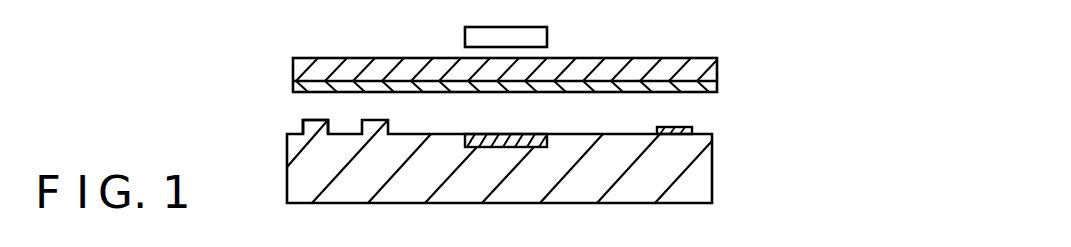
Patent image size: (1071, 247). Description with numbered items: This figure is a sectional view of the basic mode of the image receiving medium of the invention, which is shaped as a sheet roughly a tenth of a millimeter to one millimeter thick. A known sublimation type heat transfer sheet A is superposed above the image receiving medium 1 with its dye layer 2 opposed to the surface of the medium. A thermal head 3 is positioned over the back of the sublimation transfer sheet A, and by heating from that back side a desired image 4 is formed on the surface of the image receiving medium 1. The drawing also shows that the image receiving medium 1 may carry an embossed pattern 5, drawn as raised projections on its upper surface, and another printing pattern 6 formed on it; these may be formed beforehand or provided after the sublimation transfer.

The image receiving medium 1 is at (698, 183).
The dye layer 2 is at (717, 87).
The thermal head 3 is at (547, 37).
The image 4 is at (511, 139).
The embossed pattern 5 is at (319, 119).
The printing pattern 6 is at (673, 129).
The sublimation type heat transfer sheet A is at (662, 50).